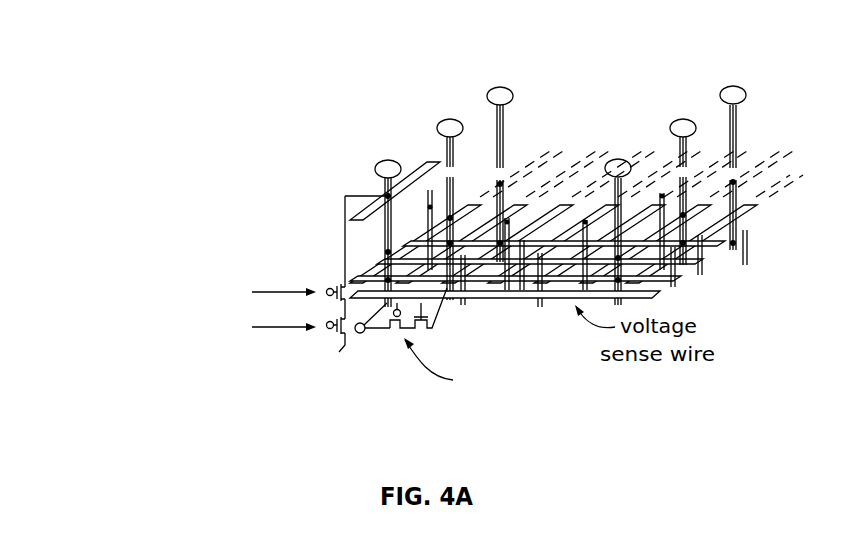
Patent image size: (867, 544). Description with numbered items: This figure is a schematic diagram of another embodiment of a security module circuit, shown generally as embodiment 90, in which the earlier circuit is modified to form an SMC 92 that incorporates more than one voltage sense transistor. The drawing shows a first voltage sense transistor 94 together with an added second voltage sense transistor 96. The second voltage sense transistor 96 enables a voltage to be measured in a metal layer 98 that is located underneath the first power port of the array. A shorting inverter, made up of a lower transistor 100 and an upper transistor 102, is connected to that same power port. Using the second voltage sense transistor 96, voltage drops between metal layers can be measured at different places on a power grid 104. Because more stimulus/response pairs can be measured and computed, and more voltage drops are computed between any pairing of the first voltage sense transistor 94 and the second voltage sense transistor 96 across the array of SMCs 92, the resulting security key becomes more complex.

The embodiment of SMC 90 is at (362, 92).
The SMC 92 is at (90, 295).
The first voltage sense transistor 94 is at (343, 337).
The second voltage sense transistor 96 is at (335, 285).
The metal layer 98 is at (440, 160).
The lower transistor 100 is at (428, 333).
The upper transistor 102 is at (392, 333).
The power grid 104 is at (714, 280).